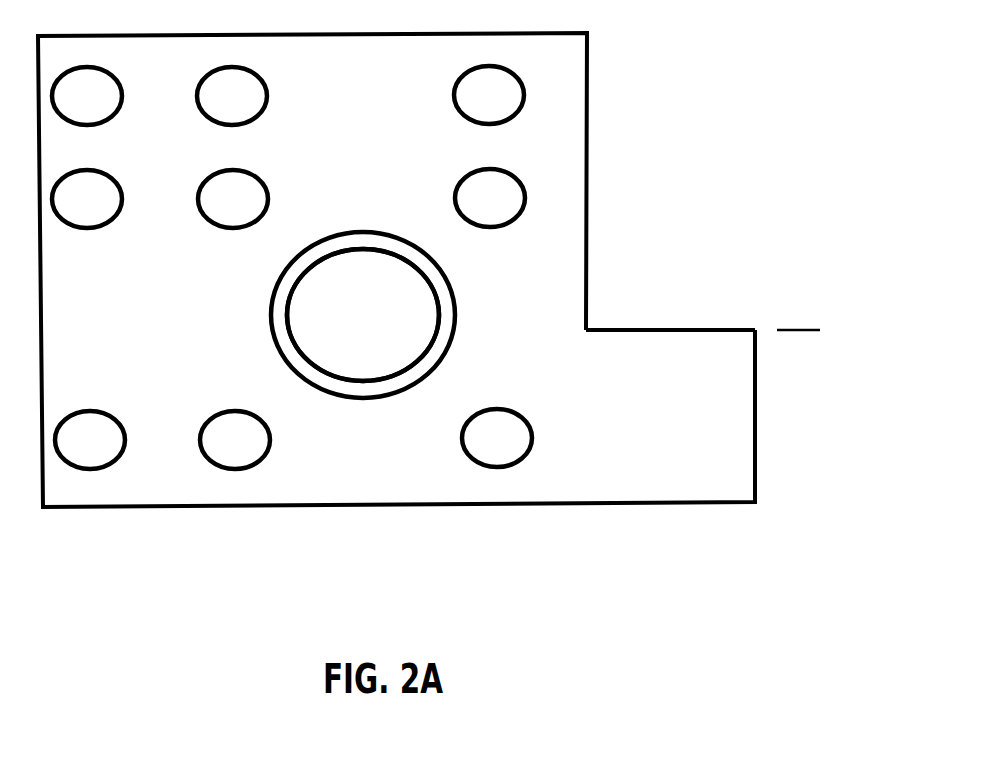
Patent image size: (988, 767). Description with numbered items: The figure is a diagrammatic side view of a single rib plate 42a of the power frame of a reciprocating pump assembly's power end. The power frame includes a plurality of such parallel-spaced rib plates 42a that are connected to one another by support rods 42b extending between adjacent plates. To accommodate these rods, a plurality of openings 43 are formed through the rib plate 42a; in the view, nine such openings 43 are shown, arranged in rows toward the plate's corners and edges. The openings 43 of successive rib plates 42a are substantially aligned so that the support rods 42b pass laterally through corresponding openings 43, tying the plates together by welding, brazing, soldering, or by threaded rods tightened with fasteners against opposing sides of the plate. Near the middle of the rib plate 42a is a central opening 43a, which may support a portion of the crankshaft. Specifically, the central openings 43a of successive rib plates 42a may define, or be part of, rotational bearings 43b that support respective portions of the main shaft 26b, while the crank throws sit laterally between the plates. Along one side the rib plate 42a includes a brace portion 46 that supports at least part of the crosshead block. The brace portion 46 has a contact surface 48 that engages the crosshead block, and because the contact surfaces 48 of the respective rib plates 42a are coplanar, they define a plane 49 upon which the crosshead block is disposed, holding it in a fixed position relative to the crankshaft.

The rib plate 42a is at (396, 270).
The support rod 42b is at (300, 280).
The opening 43 is at (83, 118).
The central opening 43a is at (347, 391).
The rotational bearing 43b is at (410, 372).
The main shaft 26b is at (363, 315).
The brace portion 46 is at (758, 418).
The contact surface 48 is at (670, 329).
The plane 49 is at (801, 328).